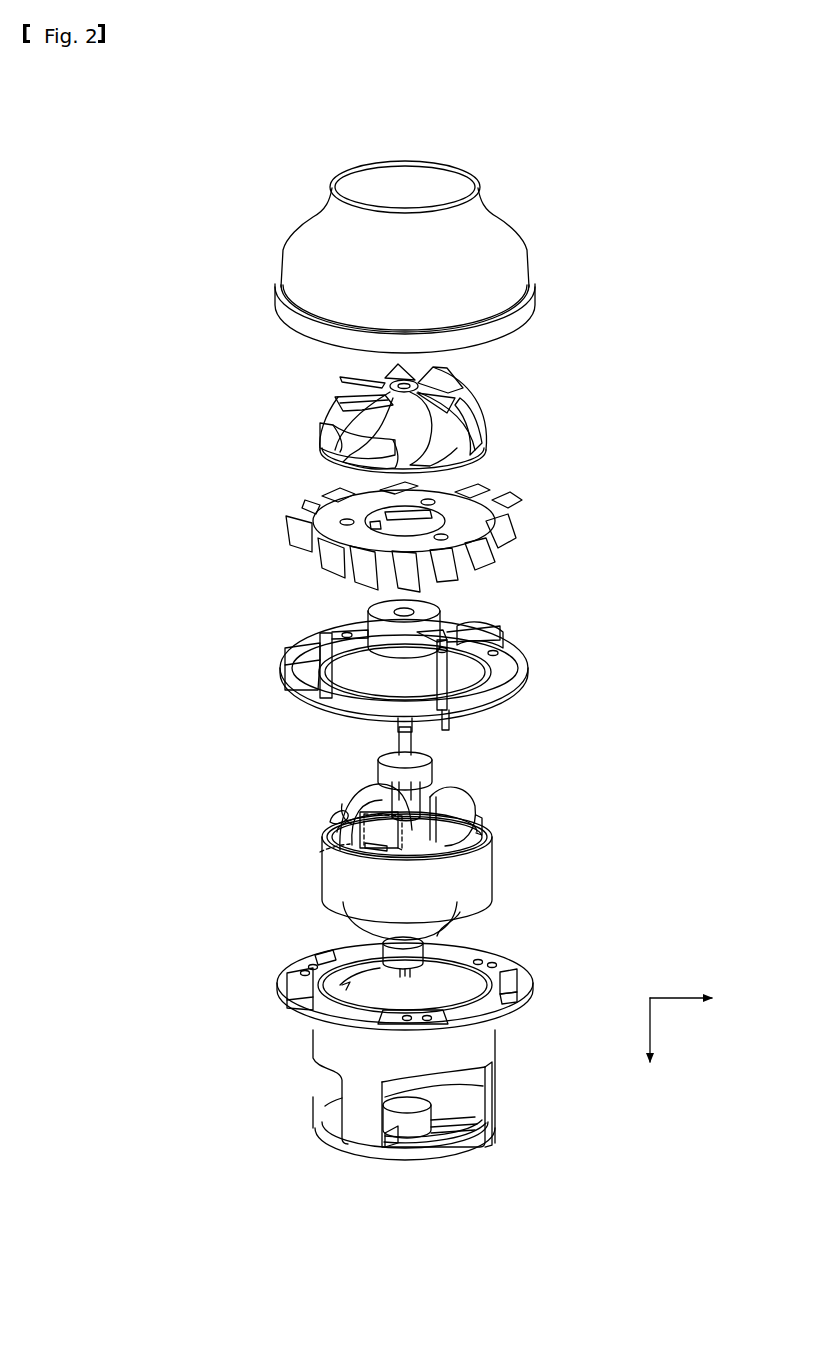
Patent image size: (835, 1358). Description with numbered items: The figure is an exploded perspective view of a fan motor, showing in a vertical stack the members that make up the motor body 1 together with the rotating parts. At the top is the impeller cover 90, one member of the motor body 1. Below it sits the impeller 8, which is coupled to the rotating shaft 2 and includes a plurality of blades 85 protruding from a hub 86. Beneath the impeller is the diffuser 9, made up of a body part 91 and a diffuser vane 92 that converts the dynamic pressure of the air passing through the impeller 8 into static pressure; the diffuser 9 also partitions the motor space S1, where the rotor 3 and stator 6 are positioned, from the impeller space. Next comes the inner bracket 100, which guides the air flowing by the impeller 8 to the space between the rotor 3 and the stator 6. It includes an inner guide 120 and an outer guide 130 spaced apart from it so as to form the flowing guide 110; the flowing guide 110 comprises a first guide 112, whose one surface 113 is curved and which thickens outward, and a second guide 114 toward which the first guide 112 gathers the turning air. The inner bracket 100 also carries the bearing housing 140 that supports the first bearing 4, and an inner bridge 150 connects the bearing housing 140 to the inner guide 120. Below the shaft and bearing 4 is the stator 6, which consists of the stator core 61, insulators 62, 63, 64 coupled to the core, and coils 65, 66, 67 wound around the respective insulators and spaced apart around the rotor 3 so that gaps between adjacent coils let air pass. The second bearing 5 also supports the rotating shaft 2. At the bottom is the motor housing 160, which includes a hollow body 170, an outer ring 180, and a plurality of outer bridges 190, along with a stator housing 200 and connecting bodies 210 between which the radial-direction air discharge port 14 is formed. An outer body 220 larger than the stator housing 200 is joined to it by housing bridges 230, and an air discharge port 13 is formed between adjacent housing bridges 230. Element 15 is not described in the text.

The motor body 1 is at (532, 193).
The impeller cover 90 is at (505, 238).
The impeller 8 is at (560, 372).
The blades 85 is at (470, 390).
The hub 86 is at (462, 440).
The diffuser 9 is at (560, 470).
The body part 91 is at (460, 505).
The diffuser vane 92 is at (505, 525).
The inner bracket 100 is at (282, 682).
The flowing guide 110 is at (572, 593).
The first guide 112 is at (498, 648).
The one surface 113 is at (465, 632).
The second guide 114 is at (470, 628).
The inner guide 120 is at (500, 683).
The outer guide 130 is at (530, 660).
The bearing housing 140 is at (378, 610).
The inner bridge 150 is at (482, 688).
The rotating shaft 2 is at (412, 742).
The first bearing 4 is at (432, 770).
The stator 6 is at (320, 792).
The rotor 3 is at (455, 790).
The insulator 63 is at (388, 805).
The insulator 64 is at (332, 857).
The coil 65 is at (465, 803).
The coil 66 is at (368, 790).
The coil 67 is at (345, 828).
The stator core 61 is at (478, 866).
The insulator 62 is at (470, 843).
The stator housing 200 is at (495, 1050).
The outer body 220 is at (530, 980).
The housing bridges 230 is at (505, 970).
The air discharge port 13 is at (520, 993).
The motor housing 160 is at (277, 1000).
The motor space S1 is at (325, 968).
The second bearing 5 is at (355, 940).
The radial-direction air discharge port 14 is at (318, 1088).
The connecting bodies 210 is at (492, 1105).
The outer ring 180 is at (475, 1138).
The hollow body 170 is at (410, 1138).
The outer bridges 190 is at (450, 1128).
The rib 15 is at (432, 1145).